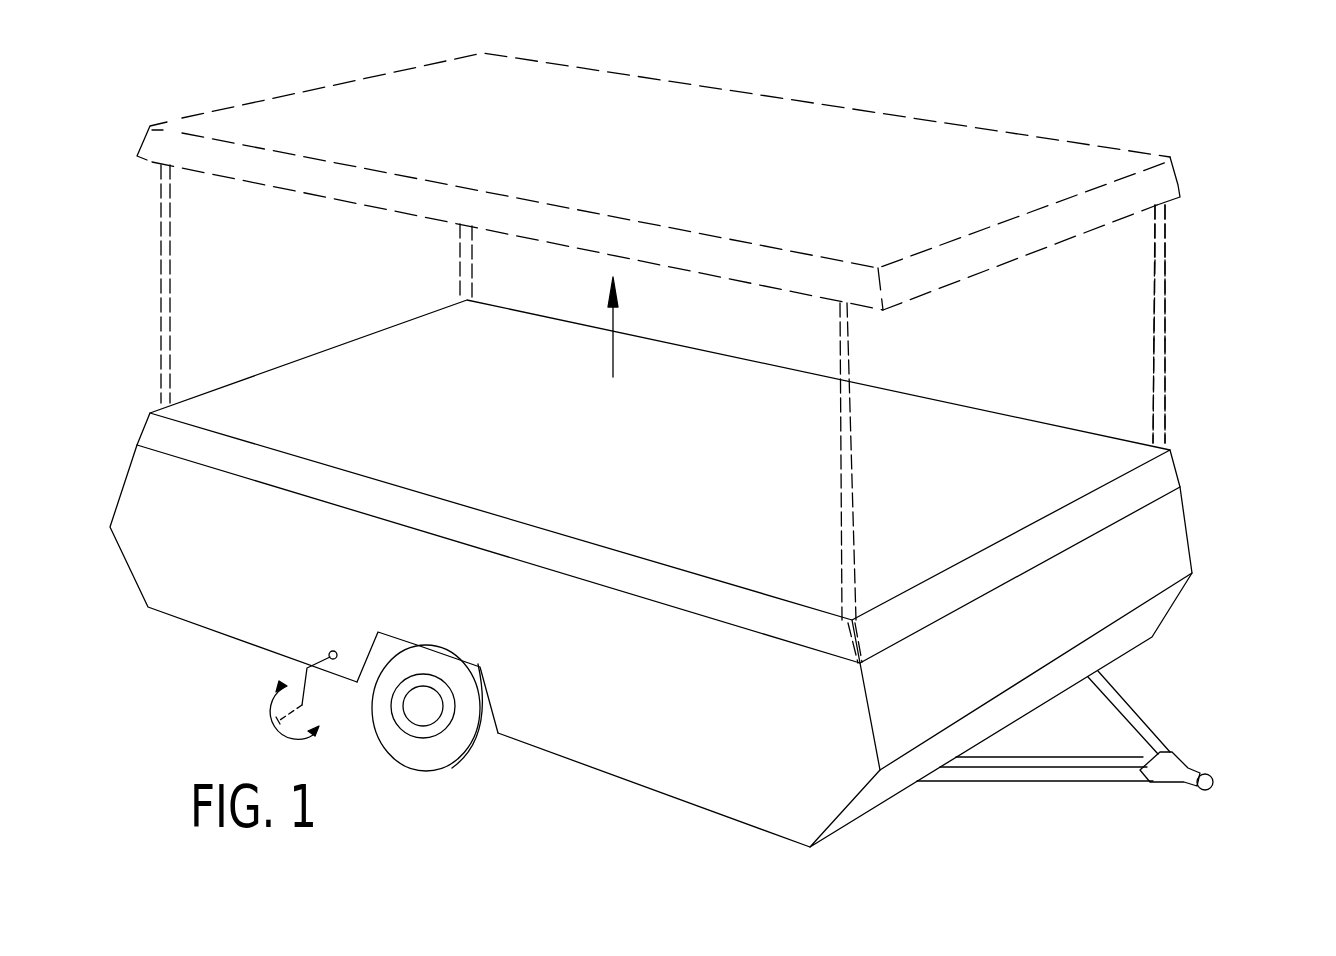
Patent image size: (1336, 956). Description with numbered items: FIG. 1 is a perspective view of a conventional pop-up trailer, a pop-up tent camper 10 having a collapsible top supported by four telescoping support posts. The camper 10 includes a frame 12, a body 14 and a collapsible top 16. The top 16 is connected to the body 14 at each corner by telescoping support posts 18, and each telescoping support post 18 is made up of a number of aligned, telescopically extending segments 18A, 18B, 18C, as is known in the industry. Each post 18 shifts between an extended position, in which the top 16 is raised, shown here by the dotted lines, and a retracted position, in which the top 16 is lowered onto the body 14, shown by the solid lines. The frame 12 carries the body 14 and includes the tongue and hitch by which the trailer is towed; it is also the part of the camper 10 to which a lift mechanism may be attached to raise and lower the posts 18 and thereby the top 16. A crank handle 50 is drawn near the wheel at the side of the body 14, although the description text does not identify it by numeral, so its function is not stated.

The pop-up tent camper 10 is at (1247, 236).
The frame 12 is at (1115, 682).
The body 14 is at (1187, 535).
The collapsible top 16 is at (1180, 161).
The telescoping support post 18 is at (168, 285).
The telescopically extending segment 18A is at (1166, 400).
The telescopically extending segment 18B is at (1155, 300).
The telescopically extending segment 18C is at (1163, 230).
The crank handle 50 is at (343, 703).